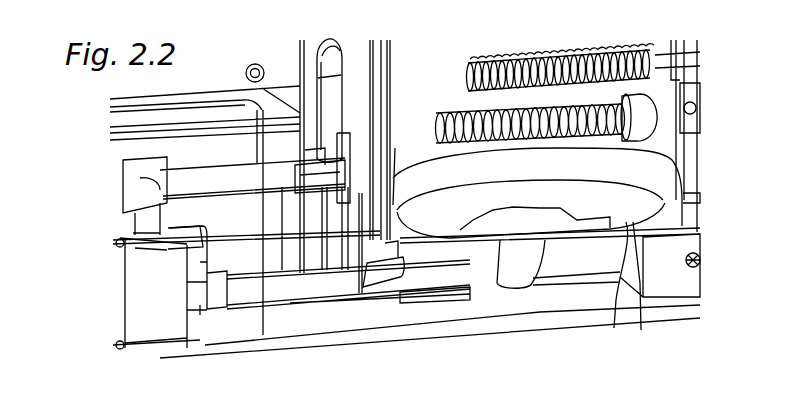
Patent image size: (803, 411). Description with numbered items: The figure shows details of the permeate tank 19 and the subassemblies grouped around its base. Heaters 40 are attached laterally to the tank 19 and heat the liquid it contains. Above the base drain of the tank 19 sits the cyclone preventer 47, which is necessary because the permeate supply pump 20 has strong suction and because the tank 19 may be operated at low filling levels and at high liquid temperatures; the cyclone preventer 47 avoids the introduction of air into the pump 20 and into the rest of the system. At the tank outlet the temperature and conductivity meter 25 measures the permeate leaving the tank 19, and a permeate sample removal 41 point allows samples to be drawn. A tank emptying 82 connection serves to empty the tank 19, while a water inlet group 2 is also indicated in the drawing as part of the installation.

The water inlet group 2 is at (700, 258).
The permeate tank 19 is at (405, 120).
The permeate supply pump 20 is at (160, 284).
The temperature and conductivity meter tank outlet 25 is at (395, 246).
The heater 40 is at (553, 107).
The permeate sample removal 41 is at (316, 170).
The cyclone prevention 47 is at (616, 335).
The tank emptying 82 is at (415, 298).